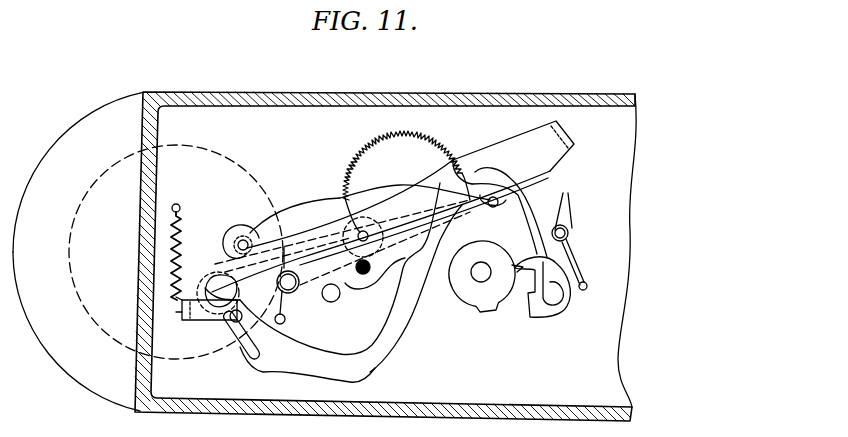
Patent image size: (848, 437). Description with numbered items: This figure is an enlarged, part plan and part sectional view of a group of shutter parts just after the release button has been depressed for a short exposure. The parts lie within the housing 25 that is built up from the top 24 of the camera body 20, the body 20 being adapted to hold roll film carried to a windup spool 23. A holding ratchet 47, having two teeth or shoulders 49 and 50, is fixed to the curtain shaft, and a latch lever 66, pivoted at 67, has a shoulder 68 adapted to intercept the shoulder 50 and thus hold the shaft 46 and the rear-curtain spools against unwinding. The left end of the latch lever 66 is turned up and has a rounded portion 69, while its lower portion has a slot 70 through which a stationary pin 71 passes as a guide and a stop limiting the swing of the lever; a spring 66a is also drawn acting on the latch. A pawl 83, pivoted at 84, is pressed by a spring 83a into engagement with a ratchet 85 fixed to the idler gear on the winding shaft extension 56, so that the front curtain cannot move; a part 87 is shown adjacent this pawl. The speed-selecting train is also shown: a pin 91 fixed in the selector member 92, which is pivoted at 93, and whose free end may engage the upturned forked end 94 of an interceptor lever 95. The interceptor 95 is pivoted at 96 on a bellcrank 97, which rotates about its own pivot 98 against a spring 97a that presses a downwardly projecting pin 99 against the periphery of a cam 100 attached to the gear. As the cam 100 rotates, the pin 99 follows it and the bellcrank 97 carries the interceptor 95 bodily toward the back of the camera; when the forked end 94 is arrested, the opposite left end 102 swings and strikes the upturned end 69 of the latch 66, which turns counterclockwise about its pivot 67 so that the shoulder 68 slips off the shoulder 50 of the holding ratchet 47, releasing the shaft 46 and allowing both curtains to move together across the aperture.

The body 20 is at (70, 376).
The windup spool 23 is at (70, 228).
The top 24 is at (84, 122).
The housing 25 is at (290, 92).
The shaft 46 is at (464, 302).
The holding ratchet 47 is at (500, 312).
The tooth 49 is at (479, 284).
The shoulder 50 is at (544, 319).
The shaft extension 56 is at (358, 298).
The latch lever 66 is at (396, 356).
The spring 66a is at (200, 190).
The pivot 67 is at (472, 180).
The shoulder 68 is at (570, 258).
The rounded portion 69 is at (200, 320).
The slot 70 is at (238, 358).
The stationary pin 71 is at (230, 332).
The pawl 83 is at (500, 158).
The spring 83a is at (570, 208).
The pivot 84 is at (568, 230).
The ratchet 85 is at (376, 170).
The block 87 is at (572, 150).
The pin 91 is at (364, 278).
The selector member 92 is at (429, 286).
The pivot 93 is at (213, 278).
The forked end 94 is at (552, 186).
The interceptor 95 is at (416, 210).
The pivot 96 is at (343, 224).
The bellcrank 97 is at (250, 228).
The spring 97a is at (299, 224).
The pivot 98 is at (324, 302).
The pin 99 is at (244, 240).
The cam 100 is at (307, 225).
The left end 102 is at (234, 252).